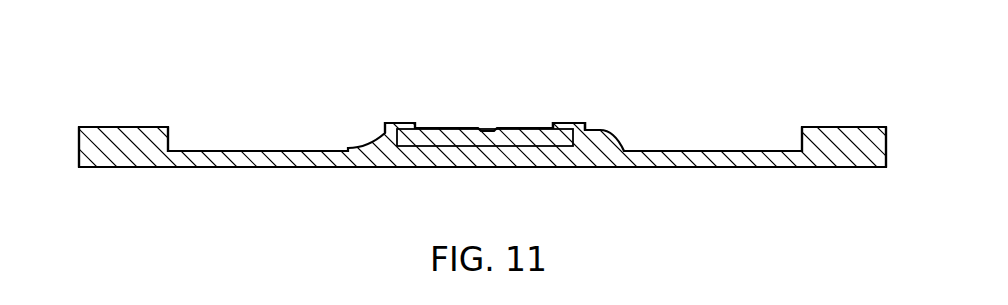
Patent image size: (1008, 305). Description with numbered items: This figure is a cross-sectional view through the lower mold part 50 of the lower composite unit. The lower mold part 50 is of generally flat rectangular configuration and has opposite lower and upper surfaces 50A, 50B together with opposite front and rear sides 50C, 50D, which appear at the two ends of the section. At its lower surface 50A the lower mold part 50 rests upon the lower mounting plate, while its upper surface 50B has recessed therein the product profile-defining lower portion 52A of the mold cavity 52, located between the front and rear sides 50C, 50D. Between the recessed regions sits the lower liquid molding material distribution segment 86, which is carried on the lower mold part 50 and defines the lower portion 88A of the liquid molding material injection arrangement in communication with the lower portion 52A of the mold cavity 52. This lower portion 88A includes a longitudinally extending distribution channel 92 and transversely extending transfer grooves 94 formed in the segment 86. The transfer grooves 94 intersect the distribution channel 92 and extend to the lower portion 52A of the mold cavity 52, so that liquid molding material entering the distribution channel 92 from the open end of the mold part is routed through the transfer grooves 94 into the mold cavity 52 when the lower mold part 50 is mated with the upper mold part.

The lower mold part 50 is at (147, 167).
The lower surface 50A is at (222, 167).
The upper surface 50B is at (860, 127).
The front side 50C is at (79, 146).
The rear side 50D is at (888, 148).
The mold cavity 52 is at (224, 146).
The lower portion of mold cavity 52A is at (258, 148).
The lower liquid molding material distribution segment 86 is at (439, 138).
The lower portion of liquid molding material injection arrangement 88A is at (571, 115).
The distribution channel 92 is at (487, 129).
The transfer grooves 94 is at (450, 127).